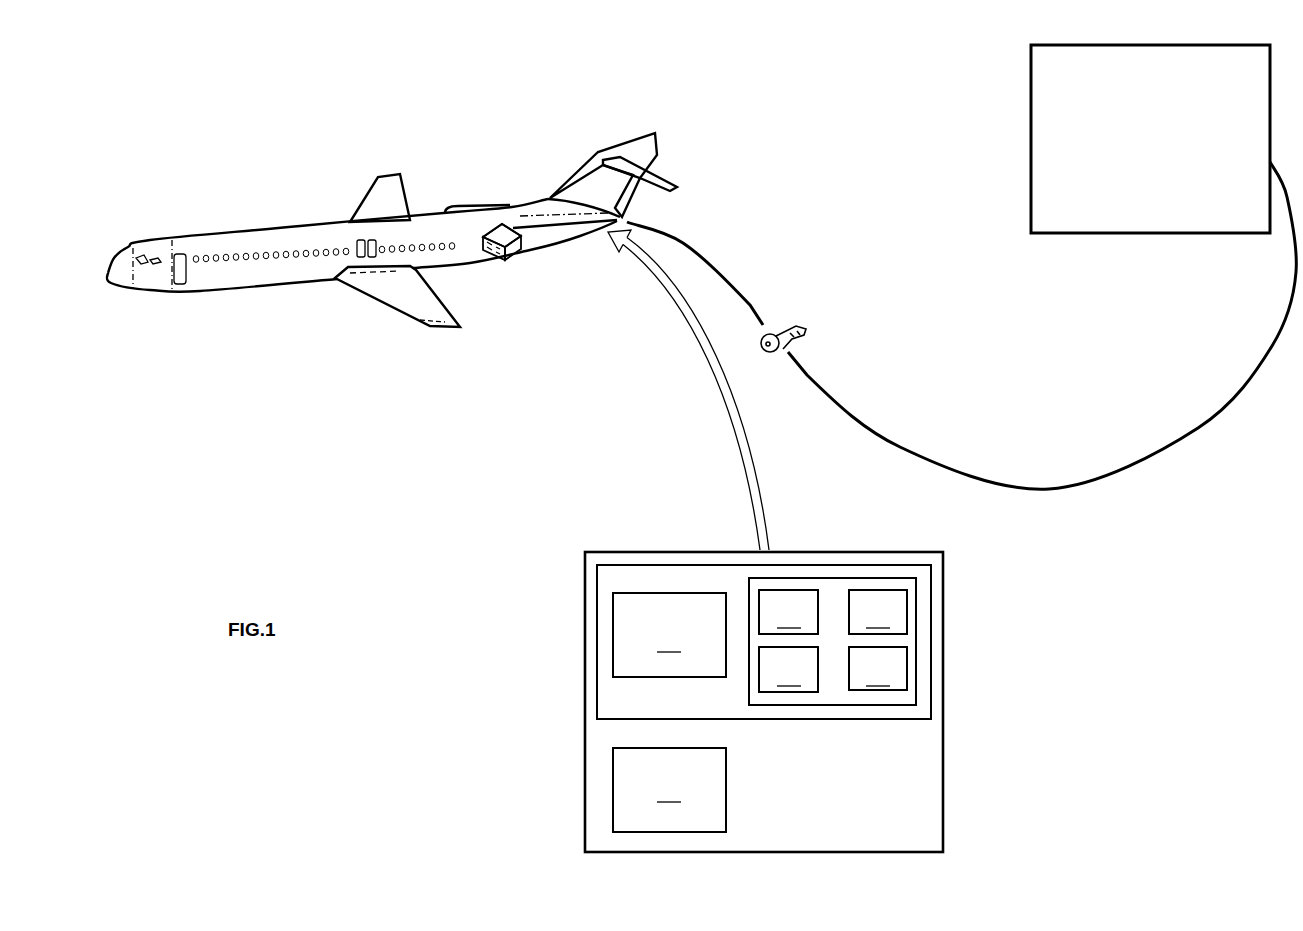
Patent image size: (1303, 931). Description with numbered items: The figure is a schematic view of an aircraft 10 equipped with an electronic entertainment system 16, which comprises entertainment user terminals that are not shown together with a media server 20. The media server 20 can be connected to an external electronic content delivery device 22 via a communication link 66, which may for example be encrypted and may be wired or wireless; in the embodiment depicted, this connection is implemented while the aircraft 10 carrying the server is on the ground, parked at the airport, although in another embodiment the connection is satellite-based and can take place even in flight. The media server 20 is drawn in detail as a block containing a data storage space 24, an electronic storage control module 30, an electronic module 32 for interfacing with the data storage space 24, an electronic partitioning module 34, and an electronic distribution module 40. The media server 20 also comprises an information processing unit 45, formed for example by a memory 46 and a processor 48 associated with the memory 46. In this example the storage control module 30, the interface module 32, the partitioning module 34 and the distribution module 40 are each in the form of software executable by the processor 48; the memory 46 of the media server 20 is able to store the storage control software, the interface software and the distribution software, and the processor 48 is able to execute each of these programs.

The aircraft 10 is at (140, 225).
The electronic entertainment system 16 is at (490, 226).
The media server 20 is at (507, 252).
The external electronic content delivery device 22 is at (1097, 236).
The data storage space 24 is at (669, 790).
The electronic storage control module 30 is at (788, 612).
The electronic module for interfacing with the data storage space 32 is at (878, 612).
The electronic partitioning module 34 is at (788, 669).
The electronic distribution module 40 is at (878, 668).
The information processing unit 45 is at (597, 700).
The memory 46 is at (916, 643).
The processor 48 is at (669, 635).
The communication link 66 is at (1000, 482).